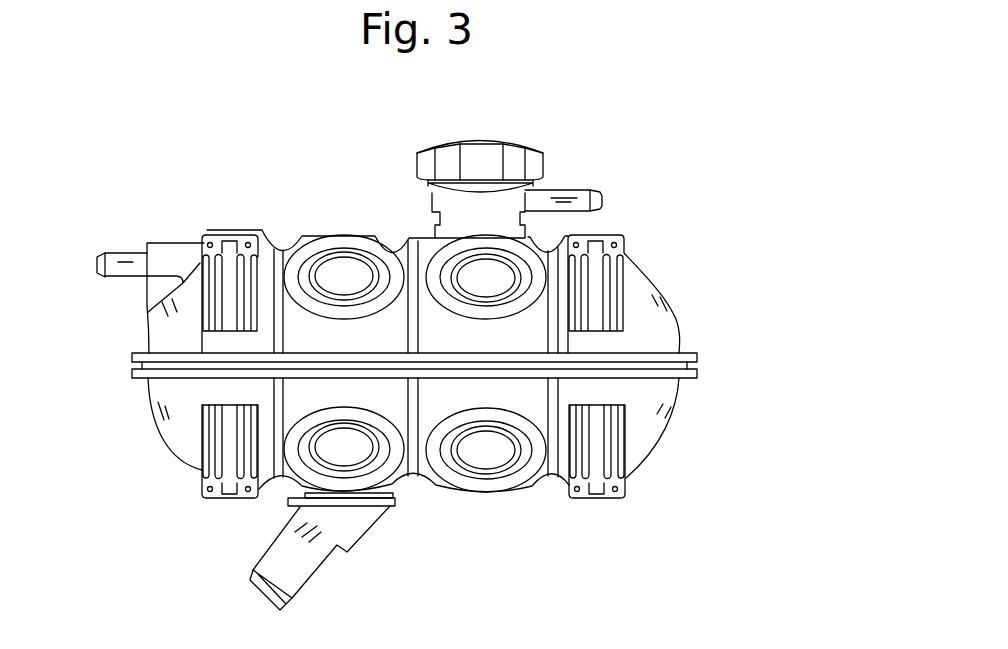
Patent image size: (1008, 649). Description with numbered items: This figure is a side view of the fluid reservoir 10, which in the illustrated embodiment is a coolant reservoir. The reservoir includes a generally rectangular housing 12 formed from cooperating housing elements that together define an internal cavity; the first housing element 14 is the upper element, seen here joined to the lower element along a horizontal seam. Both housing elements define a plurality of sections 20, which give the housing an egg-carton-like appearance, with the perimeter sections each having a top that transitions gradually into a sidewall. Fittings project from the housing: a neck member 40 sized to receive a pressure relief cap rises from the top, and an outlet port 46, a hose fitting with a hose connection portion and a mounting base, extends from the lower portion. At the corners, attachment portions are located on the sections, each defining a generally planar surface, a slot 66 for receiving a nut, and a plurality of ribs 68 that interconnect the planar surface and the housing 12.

The fluid reservoir 10 is at (711, 176).
The housing 12 is at (155, 431).
The first housing element 14 is at (682, 314).
The sections 20 is at (338, 253).
The neck member 40 is at (510, 188).
The outlet port 46 is at (295, 570).
The slot 66 is at (600, 495).
The ribs 68 is at (625, 440).